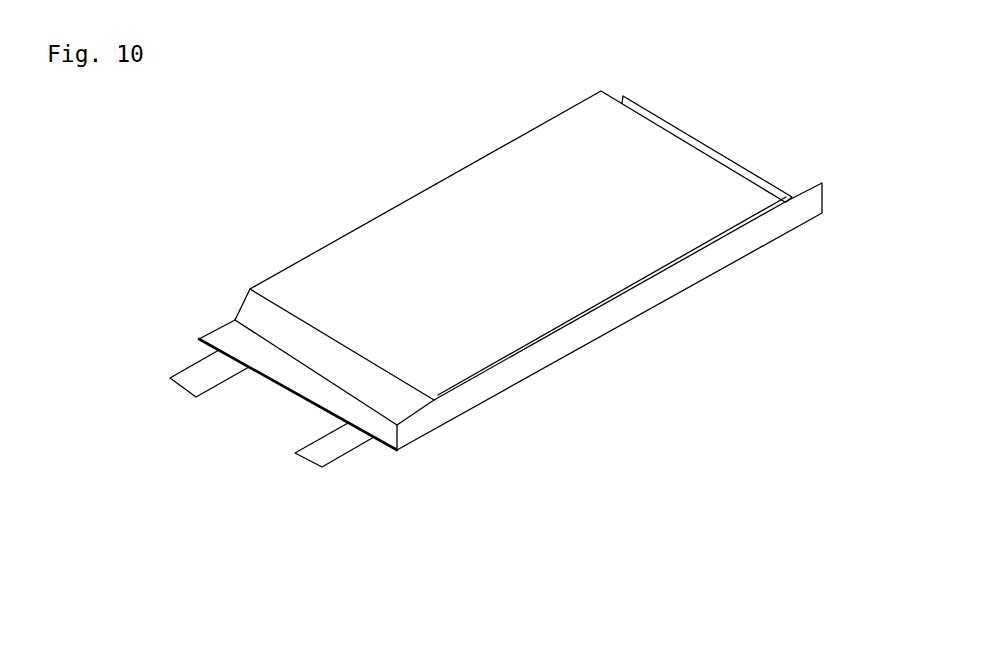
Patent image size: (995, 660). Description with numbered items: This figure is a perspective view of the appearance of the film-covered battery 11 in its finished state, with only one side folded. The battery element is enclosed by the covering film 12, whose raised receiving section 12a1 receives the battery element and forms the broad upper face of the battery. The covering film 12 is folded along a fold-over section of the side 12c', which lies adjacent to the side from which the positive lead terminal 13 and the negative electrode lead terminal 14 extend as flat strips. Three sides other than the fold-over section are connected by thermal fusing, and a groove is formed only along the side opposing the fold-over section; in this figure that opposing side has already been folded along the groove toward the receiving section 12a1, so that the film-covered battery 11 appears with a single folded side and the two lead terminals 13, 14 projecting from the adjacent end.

The film-covered battery 11 is at (332, 170).
The covering film 12 is at (695, 173).
The receiving section 12a1 is at (445, 203).
The side 12c' is at (278, 338).
The positive lead terminal 13 is at (318, 455).
The negative electrode lead terminal 14 is at (193, 382).